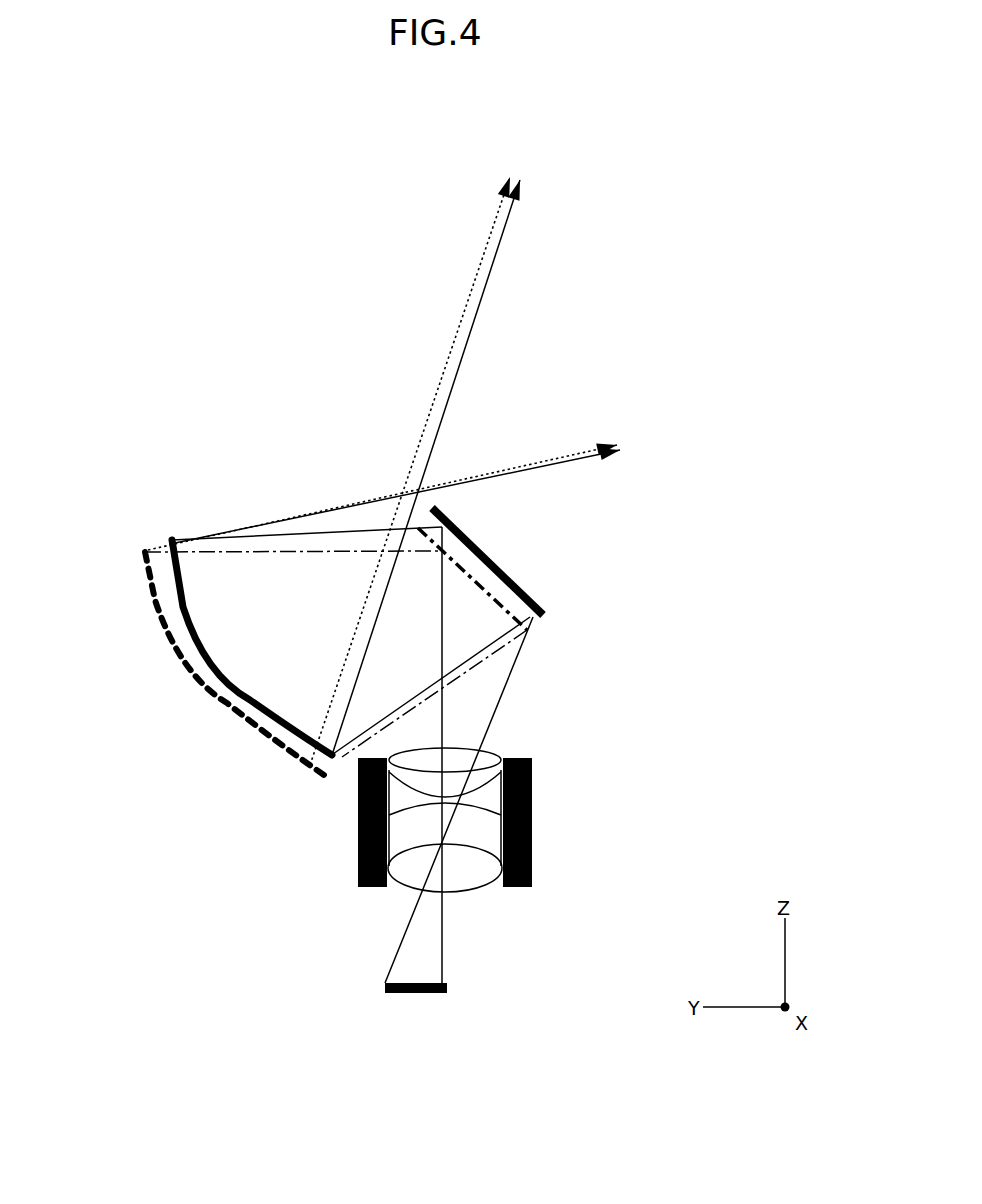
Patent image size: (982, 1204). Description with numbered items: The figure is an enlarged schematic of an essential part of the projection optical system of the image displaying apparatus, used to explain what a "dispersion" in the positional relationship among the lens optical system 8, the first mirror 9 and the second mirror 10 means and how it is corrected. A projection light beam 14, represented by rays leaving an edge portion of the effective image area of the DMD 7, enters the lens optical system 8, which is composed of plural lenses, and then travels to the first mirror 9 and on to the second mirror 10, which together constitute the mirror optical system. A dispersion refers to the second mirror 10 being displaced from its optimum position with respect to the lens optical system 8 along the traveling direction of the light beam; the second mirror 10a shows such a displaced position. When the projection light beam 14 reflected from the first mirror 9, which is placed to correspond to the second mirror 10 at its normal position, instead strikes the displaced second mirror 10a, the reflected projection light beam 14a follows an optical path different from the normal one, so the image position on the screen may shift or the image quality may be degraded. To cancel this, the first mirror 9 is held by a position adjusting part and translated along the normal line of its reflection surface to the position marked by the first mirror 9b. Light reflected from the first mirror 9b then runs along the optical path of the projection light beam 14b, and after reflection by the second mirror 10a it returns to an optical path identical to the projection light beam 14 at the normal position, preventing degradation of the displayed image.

The DMD 7 is at (385, 991).
The lens optical system 8 is at (541, 758).
The first mirror 9 is at (531, 618).
The first mirror at adjusted position 9b is at (532, 631).
The second mirror 10 is at (172, 540).
The second mirror at displaced position 10a is at (145, 548).
The projection light beam 14 is at (488, 277).
The projection light beam reflected from displaced second mirror 14a is at (468, 295).
The projection light beam from adjusted first mirror 14b is at (518, 657).